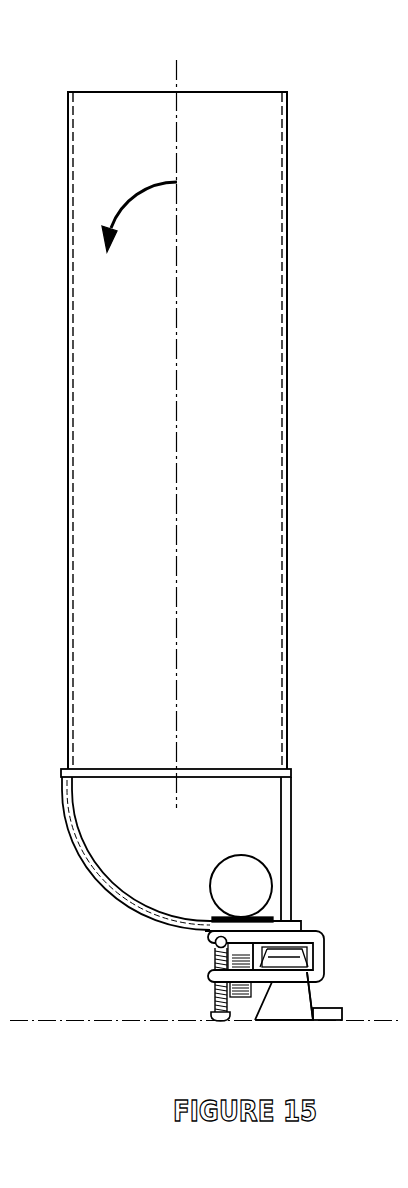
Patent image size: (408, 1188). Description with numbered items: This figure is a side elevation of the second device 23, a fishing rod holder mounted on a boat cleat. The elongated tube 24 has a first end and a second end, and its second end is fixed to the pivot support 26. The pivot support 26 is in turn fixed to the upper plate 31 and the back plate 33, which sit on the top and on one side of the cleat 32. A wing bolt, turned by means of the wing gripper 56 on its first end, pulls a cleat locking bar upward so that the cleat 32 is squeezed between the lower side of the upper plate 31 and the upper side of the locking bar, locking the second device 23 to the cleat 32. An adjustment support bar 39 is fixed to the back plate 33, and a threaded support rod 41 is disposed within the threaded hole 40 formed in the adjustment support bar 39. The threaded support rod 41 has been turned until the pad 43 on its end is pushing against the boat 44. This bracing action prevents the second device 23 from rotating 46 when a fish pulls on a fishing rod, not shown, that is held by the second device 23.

The second device 23 is at (287, 248).
The elongated tube 24 is at (287, 317).
The pivot support 26 is at (291, 808).
The upper plate 31 is at (312, 932).
The cleat 32 is at (312, 995).
The back plate 33 is at (323, 937).
The adjustment support bar 39 is at (282, 983).
The threaded hole 40 is at (208, 973).
The threaded support rod 41 is at (208, 941).
The pad 43 is at (209, 1017).
The boat 44 is at (108, 1020).
The rotating 46 is at (155, 181).
The wing gripper 56 is at (264, 865).